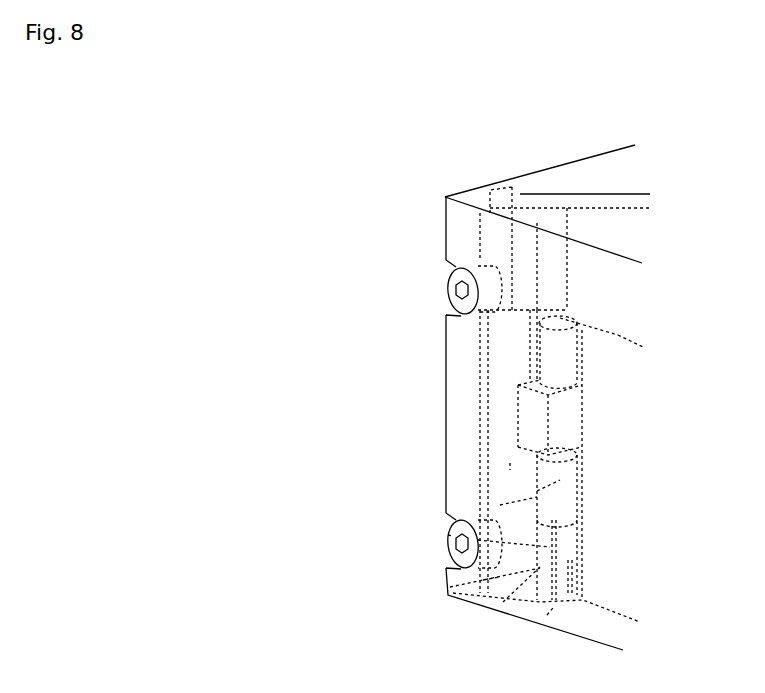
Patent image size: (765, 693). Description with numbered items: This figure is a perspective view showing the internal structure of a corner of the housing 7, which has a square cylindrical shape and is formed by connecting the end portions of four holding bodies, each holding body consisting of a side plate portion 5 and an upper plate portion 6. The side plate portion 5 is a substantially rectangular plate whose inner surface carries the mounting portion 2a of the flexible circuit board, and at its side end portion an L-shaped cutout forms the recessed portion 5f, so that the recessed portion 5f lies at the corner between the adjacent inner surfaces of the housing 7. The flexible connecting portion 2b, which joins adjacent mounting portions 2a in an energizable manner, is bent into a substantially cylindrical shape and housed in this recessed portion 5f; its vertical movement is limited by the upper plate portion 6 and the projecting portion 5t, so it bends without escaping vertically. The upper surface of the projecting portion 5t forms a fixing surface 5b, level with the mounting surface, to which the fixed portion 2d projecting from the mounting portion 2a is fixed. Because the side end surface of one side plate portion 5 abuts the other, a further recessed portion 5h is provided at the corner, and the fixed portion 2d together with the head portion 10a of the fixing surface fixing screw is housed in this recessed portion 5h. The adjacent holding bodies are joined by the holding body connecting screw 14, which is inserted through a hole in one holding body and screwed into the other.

The mounting portion 2a is at (618, 335).
The connecting portion 2b is at (530, 348).
The fixed portion 2d is at (512, 598).
The side plate portion 5 is at (465, 466).
The projecting portion 5t is at (512, 410).
The recessed portion 5f is at (510, 463).
The recessed portion 5h is at (448, 535).
The fixing surface 5b is at (483, 580).
The upper plate portion 6 is at (593, 175).
The housing 7 is at (532, 173).
The head portion 10a is at (547, 615).
The holding body connecting screw 14 is at (447, 295).